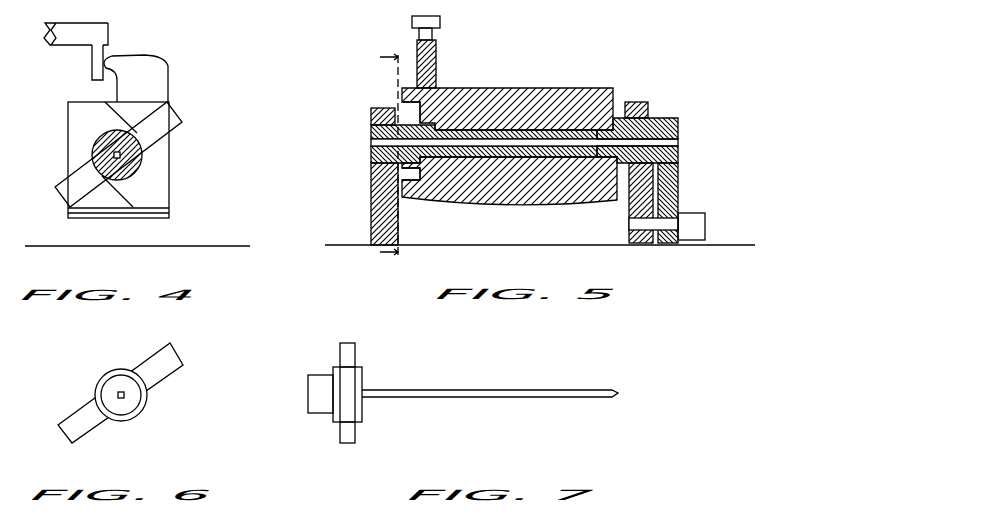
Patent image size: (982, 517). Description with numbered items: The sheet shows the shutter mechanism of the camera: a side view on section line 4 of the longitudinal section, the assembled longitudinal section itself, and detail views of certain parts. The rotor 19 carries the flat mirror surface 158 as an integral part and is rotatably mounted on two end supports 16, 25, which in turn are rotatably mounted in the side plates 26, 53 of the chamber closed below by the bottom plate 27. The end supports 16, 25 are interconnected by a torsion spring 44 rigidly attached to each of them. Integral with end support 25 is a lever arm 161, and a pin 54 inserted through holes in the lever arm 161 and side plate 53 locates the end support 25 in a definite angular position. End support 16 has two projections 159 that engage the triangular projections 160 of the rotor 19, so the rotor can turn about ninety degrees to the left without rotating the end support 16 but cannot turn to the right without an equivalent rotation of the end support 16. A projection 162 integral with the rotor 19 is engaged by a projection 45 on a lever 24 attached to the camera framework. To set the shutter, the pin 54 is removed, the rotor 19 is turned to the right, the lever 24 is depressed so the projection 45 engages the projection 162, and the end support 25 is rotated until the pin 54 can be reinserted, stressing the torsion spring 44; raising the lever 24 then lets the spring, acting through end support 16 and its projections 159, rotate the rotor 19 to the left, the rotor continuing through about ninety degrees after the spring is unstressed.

In FIG. 5, the section line 4- 4 is at (381, 154).
In FIG. 4, the end support 16 is at (105, 143).
In FIG. 5, the end support 16 is at (371, 134).
In FIG. 6, the end support 16 is at (103, 379).
In FIG. 7, the end support 16 is at (362, 378).
In FIG. 4, the rotor 19 is at (170, 183).
In FIG. 5, the rotor 19 is at (523, 134).
In FIG. 4, the lever 24 is at (81, 23).
In FIG. 5, the lever 24 is at (441, 21).
In FIG. 5, the end support 25 is at (660, 118).
In FIG. 5, the side plate 26 is at (371, 214).
In FIG. 5, the bottom plate 27 is at (478, 246).
In FIG. 4, the torsion spring 44 is at (121, 160).
In FIG. 5, the torsion spring 44 is at (483, 139).
In FIG. 6, the torsion spring 44 is at (119, 401).
In FIG. 7, the torsion spring 44 is at (481, 391).
In FIG. 4, the projection 45 is at (88, 66).
In FIG. 5, the projection 45 is at (419, 34).
In FIG. 5, the side plate 53 is at (629, 215).
In FIG. 5, the pin 54 is at (705, 221).
In FIG. 4, the flat mirror surface 158 is at (87, 102).
In FIG. 5, the flat mirror surface 158 is at (566, 89).
In FIG. 4, the projections 159 is at (175, 114).
In FIG. 6, the projections 159 is at (160, 354).
In FIG. 7, the projections 159 is at (355, 353).
In FIG. 4, the triangular projections 160 is at (161, 116).
In FIG. 5, the triangular projections 160 is at (402, 92).
In FIG. 5, the lever arm 161 is at (678, 190).
In FIG. 5, the projection 162 is at (436, 48).